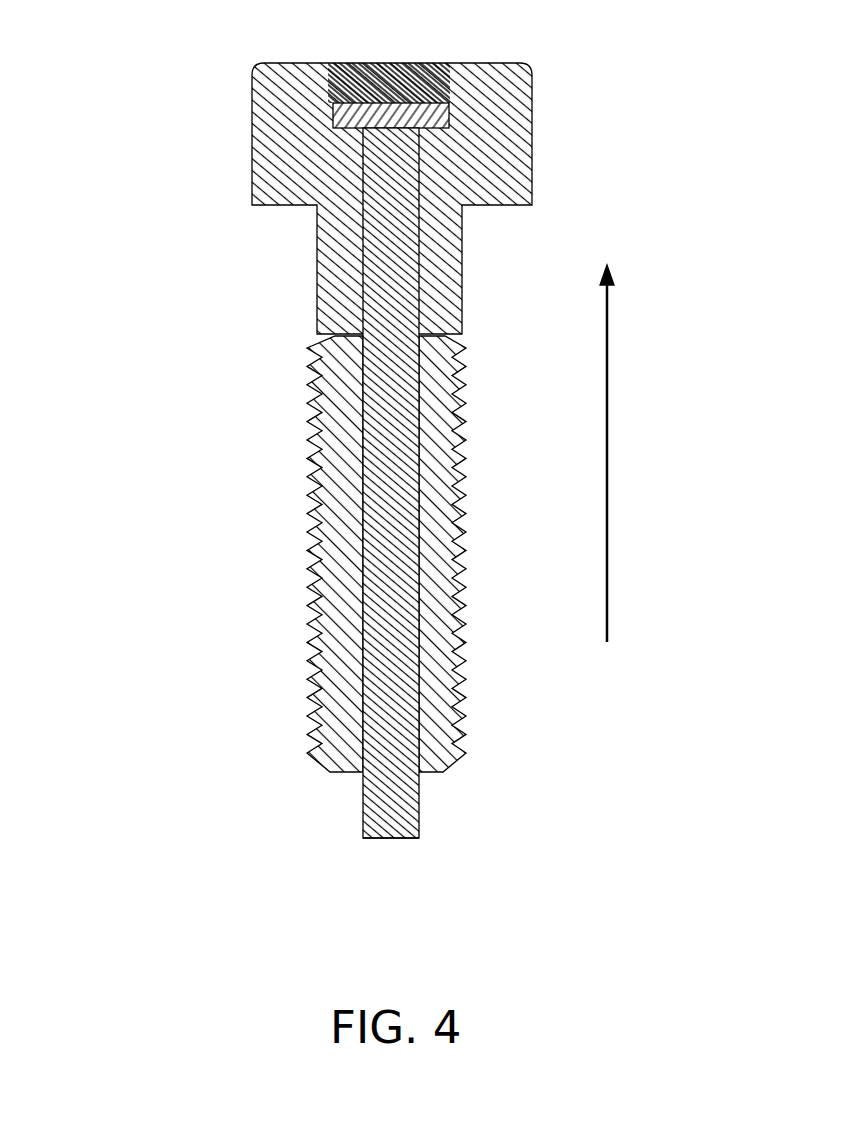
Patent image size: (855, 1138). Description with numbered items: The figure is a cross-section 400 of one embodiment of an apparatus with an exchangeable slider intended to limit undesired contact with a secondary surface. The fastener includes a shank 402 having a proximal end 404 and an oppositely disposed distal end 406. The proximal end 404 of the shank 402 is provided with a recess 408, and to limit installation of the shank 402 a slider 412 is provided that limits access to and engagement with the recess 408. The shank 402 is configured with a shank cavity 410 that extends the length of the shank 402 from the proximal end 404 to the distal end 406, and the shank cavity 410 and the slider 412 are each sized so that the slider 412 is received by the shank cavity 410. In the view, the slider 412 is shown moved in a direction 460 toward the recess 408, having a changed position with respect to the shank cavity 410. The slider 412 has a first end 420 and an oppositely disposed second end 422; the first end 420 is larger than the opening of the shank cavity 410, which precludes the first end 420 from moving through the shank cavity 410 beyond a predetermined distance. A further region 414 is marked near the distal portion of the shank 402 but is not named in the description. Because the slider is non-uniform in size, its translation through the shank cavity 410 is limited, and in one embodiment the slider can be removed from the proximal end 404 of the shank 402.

The cross-section 400 is at (135, 895).
The shank 402 is at (236, 63).
The proximal end 404 is at (463, 62).
The distal end 406 is at (445, 770).
The recess 408 is at (330, 103).
The shank cavity 410 is at (418, 342).
The slider 412 is at (420, 805).
The protruding portion 414 is at (238, 772).
The first end 420 is at (390, 103).
The second end 422 is at (393, 840).
The direction 460 is at (607, 413).